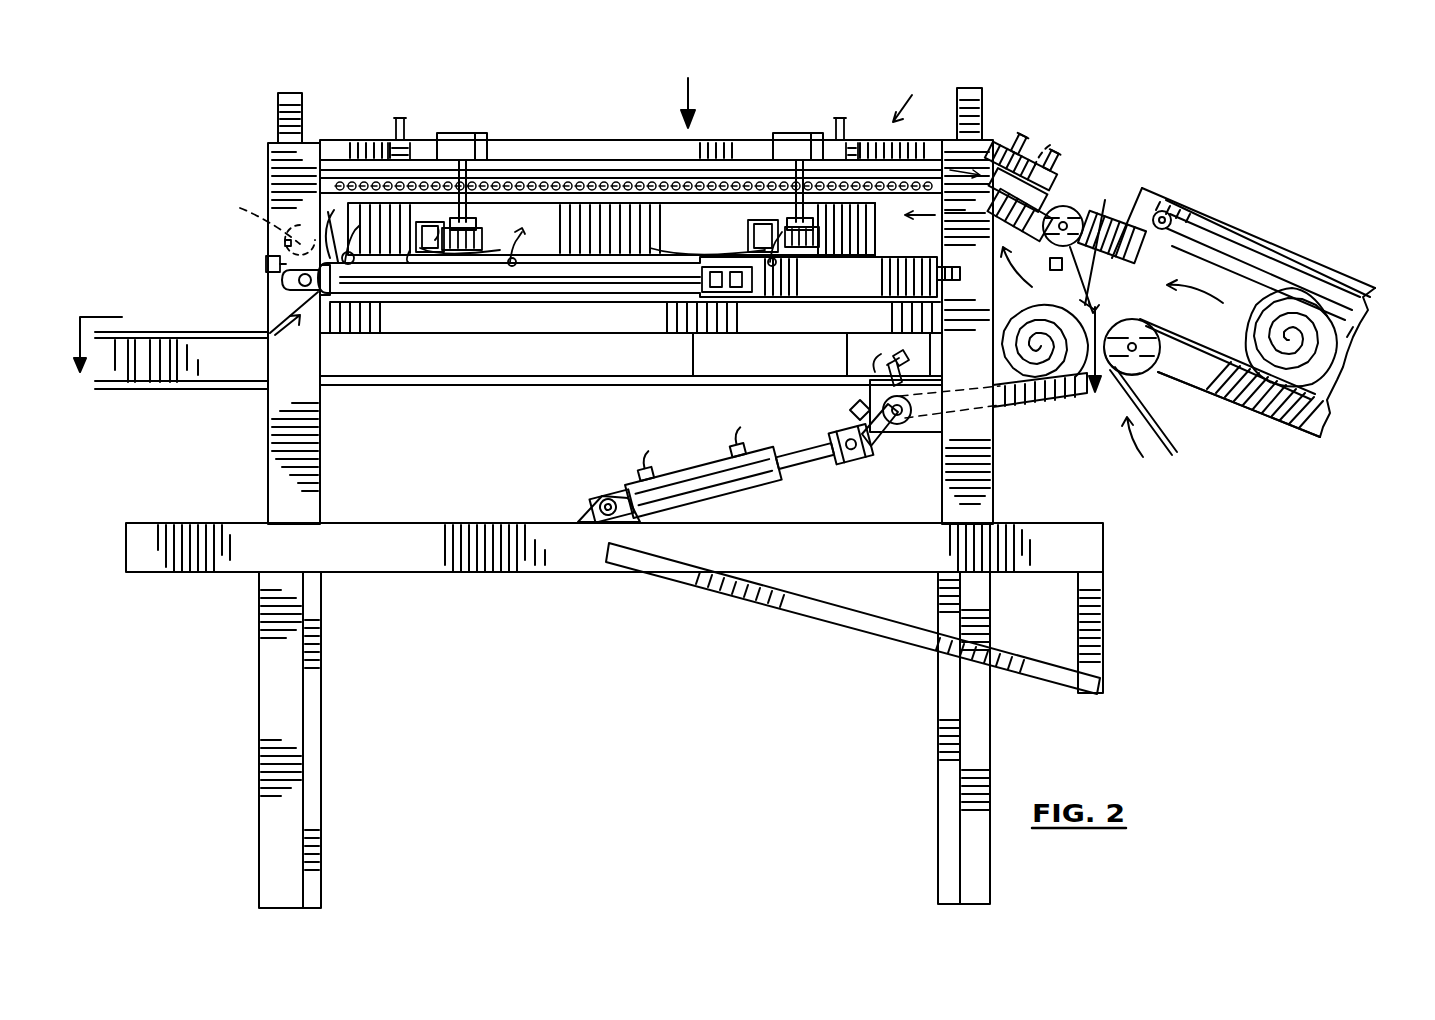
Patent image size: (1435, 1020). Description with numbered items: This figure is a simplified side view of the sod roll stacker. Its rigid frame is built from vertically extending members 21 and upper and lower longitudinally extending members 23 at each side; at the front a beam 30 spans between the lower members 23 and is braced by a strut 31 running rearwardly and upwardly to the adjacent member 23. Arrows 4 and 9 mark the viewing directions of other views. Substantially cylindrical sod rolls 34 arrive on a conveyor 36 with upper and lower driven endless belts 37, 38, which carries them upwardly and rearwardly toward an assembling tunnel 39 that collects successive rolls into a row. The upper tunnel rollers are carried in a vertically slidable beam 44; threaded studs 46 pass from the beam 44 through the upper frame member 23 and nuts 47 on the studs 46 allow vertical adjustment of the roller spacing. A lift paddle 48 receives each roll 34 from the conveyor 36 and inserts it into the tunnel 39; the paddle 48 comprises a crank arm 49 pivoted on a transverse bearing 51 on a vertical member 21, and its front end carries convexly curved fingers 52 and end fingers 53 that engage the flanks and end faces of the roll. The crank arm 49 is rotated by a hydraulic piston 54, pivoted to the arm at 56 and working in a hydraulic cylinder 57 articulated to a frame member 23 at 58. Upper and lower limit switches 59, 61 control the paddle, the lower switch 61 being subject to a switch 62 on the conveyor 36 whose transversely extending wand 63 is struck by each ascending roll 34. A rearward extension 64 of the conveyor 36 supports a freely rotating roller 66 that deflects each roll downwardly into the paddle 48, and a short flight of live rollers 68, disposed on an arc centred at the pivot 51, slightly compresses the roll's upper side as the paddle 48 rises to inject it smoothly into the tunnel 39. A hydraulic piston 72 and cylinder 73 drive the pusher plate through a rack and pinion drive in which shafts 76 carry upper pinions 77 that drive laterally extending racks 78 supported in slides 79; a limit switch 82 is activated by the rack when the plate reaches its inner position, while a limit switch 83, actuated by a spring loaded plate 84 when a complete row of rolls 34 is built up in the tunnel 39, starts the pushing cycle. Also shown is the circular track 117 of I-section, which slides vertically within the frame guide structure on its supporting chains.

The section arrow 4 is at (687, 89).
The section line 9 is at (589, 372).
The vertically extending frame member 21 is at (320, 390).
The longitudinally extending frame member 23 is at (530, 140).
The beam 30 is at (1104, 602).
The strut 31 is at (878, 628).
The sod roll 34 is at (1036, 395).
The conveyor 36 is at (1231, 196).
The upper driven endless belt 37 is at (1258, 240).
The lower driven endless belt 38 is at (1168, 440).
The assembling tunnel 39 is at (919, 97).
The longitudinally extending beam 44 is at (600, 180).
The threaded stud 46 is at (404, 130).
The nut 47 is at (396, 155).
The lift paddle 48 is at (1142, 452).
The crank arm 49 is at (875, 445).
The bearing 51 is at (905, 422).
The upwardly directed fingers 52 is at (1136, 372).
The end fingers 53 is at (1068, 395).
The hydraulic piston 54 is at (790, 462).
The piston pivot 56 is at (851, 462).
The hydraulic cylinder 57 is at (695, 470).
The cylinder articulation 58 is at (606, 497).
The upper limit switch 59 is at (882, 352).
The lower limit switch 61 is at (852, 408).
The switch 62 is at (1098, 236).
The wand 63 is at (1048, 265).
The rearward extension 64 is at (1142, 252).
The roller 66 is at (1066, 206).
The live rollers 68 is at (1025, 177).
The hydraulic piston 72 is at (599, 270).
The hydraulic cylinder 73 is at (338, 295).
The shaft 76 is at (472, 160).
The upper pinion 77 is at (482, 238).
The laterally extending rack 78 is at (445, 252).
The slide 79 is at (418, 252).
The second limit switch 82 is at (265, 263).
The limit switch 83 is at (261, 224).
The spring loaded plate 84 is at (332, 227).
The circular track 117 is at (185, 333).